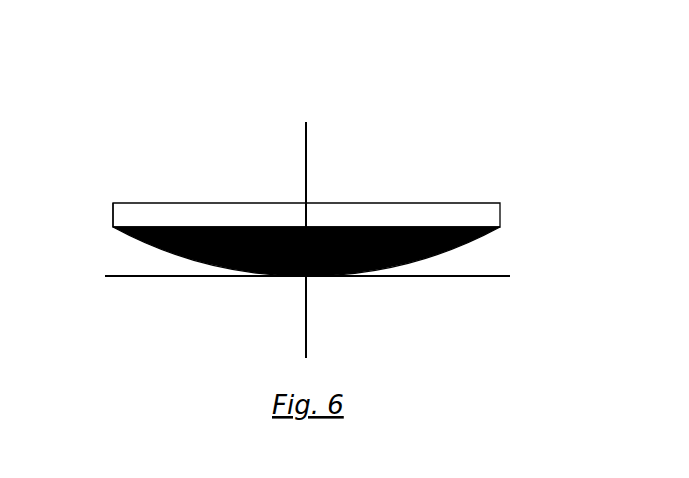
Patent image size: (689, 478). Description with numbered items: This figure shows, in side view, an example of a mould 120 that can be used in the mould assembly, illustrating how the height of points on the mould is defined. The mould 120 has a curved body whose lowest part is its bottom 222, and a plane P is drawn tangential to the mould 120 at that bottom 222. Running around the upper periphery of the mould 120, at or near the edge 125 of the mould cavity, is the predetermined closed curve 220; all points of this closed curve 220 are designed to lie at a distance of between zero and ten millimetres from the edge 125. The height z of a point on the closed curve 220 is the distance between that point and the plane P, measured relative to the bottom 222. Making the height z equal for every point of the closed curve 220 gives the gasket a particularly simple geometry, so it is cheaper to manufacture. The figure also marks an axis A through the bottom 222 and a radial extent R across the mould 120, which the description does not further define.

The mould 120 is at (248, 102).
The predetermined closed curve 220 is at (222, 203).
The edge of the cavity of the mould 125 is at (113, 203).
The bottom of the mould 222 is at (303, 278).
The optical axis A is at (307, 158).
The plane P is at (455, 277).
The radius R is at (308, 212).
The height z is at (128, 204).